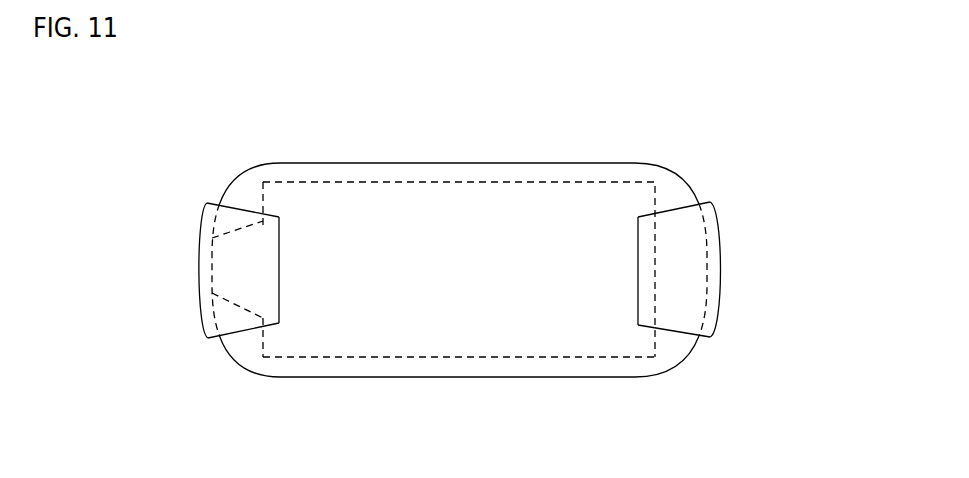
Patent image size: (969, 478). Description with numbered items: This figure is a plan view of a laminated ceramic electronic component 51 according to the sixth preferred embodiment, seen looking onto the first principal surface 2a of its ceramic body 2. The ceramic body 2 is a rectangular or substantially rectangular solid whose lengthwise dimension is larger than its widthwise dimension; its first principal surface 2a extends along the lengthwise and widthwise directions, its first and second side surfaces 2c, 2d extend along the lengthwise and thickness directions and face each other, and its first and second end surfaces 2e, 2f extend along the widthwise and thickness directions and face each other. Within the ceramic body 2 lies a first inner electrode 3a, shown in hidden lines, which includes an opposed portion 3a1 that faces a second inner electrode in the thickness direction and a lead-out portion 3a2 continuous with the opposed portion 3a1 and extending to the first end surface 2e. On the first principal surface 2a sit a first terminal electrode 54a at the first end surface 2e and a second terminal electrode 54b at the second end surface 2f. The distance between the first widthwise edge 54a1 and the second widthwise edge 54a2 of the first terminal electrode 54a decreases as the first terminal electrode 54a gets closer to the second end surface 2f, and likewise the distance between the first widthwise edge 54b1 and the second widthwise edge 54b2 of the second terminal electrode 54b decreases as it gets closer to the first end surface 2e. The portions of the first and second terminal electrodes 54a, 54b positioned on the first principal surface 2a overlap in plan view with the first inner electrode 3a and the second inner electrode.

The laminated ceramic electronic component 51 is at (216, 147).
The ceramic body 2 is at (386, 162).
The first principal surface 2a is at (576, 172).
The first side surface 2c is at (633, 378).
The second side surface 2d is at (510, 163).
The first end surface 2e is at (212, 258).
The second end surface 2f is at (708, 258).
The first inner electrode 3a is at (464, 181).
The opposed portion 3a1 is at (408, 225).
The lead-out portion 3a2 is at (247, 227).
The first terminal electrode 54a is at (215, 341).
The first widthwise edge 54a1 is at (262, 322).
The second widthwise edge 54a2 is at (245, 240).
The second terminal electrode 54b is at (724, 287).
The first widthwise edge 54b1 is at (685, 332).
The second widthwise edge 54b2 is at (685, 210).